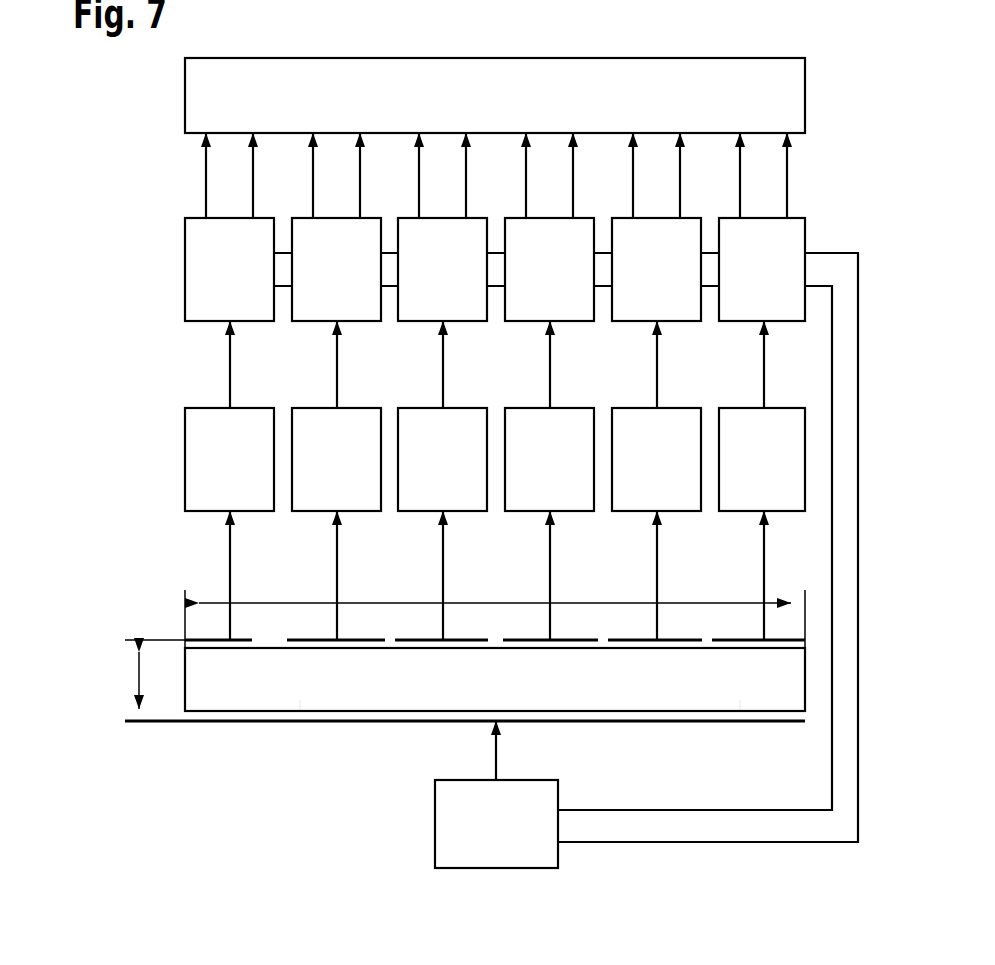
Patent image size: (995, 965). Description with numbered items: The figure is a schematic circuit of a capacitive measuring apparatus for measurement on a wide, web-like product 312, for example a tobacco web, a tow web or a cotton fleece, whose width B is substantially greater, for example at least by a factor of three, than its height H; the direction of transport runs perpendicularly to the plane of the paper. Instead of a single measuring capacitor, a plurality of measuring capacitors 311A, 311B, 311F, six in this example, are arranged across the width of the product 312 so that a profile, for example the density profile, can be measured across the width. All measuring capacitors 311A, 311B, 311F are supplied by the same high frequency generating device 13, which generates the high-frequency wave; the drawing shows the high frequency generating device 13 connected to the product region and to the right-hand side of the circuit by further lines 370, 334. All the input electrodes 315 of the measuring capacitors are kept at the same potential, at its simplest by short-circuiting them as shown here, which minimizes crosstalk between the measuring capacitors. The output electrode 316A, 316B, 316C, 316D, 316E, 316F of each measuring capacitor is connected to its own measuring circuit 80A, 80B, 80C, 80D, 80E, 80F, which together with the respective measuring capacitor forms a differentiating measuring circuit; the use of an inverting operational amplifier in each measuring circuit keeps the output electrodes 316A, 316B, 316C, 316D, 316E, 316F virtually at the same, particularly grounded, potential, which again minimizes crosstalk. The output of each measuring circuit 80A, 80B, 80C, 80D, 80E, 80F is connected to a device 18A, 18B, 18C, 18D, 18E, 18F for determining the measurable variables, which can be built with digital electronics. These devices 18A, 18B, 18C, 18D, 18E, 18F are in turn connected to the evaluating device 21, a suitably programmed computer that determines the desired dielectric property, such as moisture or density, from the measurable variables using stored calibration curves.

The evaluating device 21 is at (497, 58).
The device for determining the measurable variables 18A is at (215, 322).
The device for determining the measurable variables 18B is at (322, 322).
The device for determining the measurable variables 18C is at (428, 322).
The device for determining the measurable variables 18D is at (535, 322).
The device for determining the measurable variables 18E is at (642, 322).
The device for determining the measurable variables 18F is at (750, 322).
The measuring circuit 80A is at (215, 513).
The measuring circuit 80B is at (322, 513).
The measuring circuit 80C is at (428, 513).
The measuring circuit 80D is at (513, 513).
The measuring circuit 80E is at (642, 513).
The measuring circuit 80F is at (750, 513).
The web-like product 312 is at (200, 690).
The output electrode 316A is at (250, 641).
The output electrode 316B is at (367, 649).
The output electrode 316C is at (413, 641).
The output electrode 316D is at (588, 648).
The output electrode 316E is at (678, 648).
The output electrode 316F is at (778, 648).
The measuring capacitor 311A is at (207, 734).
The measuring capacitor 311B is at (302, 734).
The measuring capacitor 311F is at (742, 742).
The input electrodes 315 is at (318, 723).
The high frequency generating device 13 is at (497, 868).
The signal line 370 is at (645, 811).
The signal line 334 is at (710, 843).
The width B is at (482, 603).
The height H is at (139, 678).